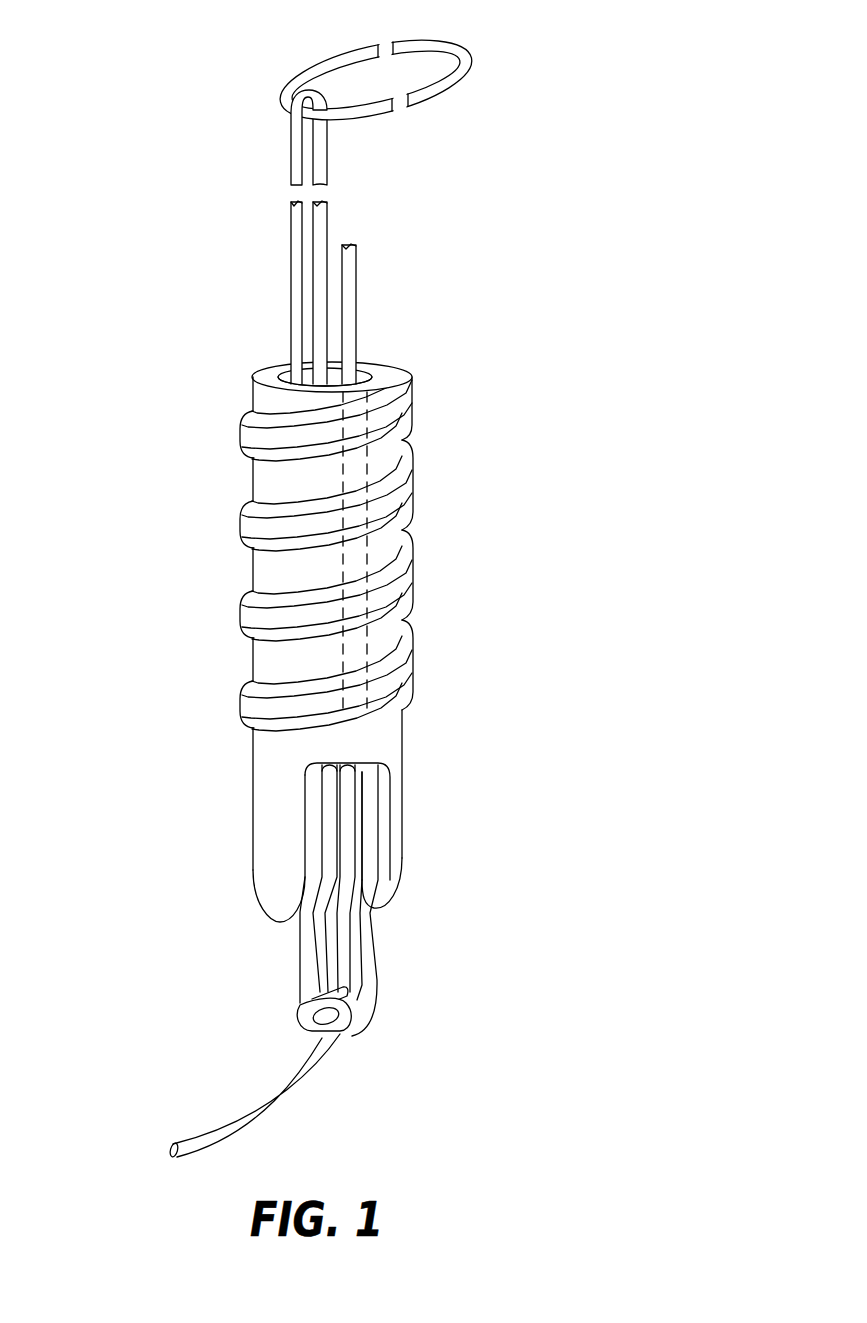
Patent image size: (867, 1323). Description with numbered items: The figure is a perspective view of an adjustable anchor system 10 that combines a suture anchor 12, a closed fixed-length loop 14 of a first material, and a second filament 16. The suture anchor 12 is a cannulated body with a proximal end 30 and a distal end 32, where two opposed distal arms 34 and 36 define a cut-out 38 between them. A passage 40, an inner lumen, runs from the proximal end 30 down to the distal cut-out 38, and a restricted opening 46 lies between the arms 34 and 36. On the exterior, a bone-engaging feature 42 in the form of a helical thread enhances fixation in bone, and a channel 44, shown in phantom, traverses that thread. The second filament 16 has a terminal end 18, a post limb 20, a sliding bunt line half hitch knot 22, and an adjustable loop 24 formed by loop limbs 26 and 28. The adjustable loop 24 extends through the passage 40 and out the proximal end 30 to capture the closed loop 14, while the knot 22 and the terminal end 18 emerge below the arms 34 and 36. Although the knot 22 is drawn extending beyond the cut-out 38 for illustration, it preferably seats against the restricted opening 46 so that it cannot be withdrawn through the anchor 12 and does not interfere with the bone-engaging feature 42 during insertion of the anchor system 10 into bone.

The adjustable anchor system 10 is at (637, 214).
The suture anchor 12 is at (282, 621).
The closed, fixed-length loop 14 is at (473, 52).
The second filament 16 is at (281, 158).
The terminal end 18 is at (228, 1138).
The post limb 20 is at (358, 293).
The sliding bunt line half hitch knot 22 is at (340, 1052).
The adjustable loop 24 is at (352, 170).
The loop limb 26 is at (325, 228).
The loop limb 28 is at (291, 268).
The proximal end 30 is at (291, 352).
The distal end 32 is at (301, 870).
The distal arm 34 is at (270, 885).
The distal arm 36 is at (404, 862).
The cut-out 38 is at (385, 917).
The passage 40 is at (363, 366).
The bone-engaging feature 42 is at (412, 573).
The channel 44 is at (357, 512).
The restricted opening 46 is at (343, 770).